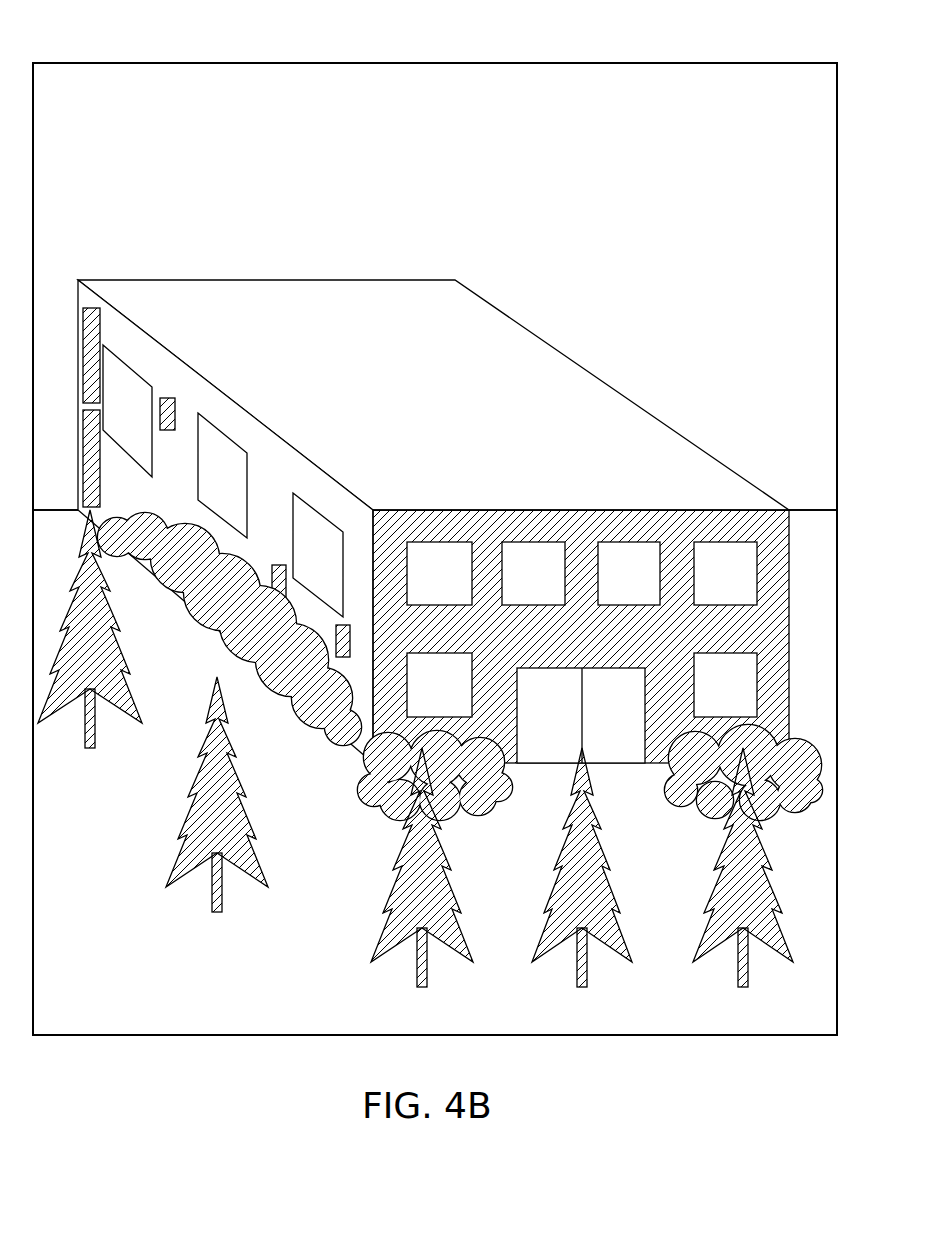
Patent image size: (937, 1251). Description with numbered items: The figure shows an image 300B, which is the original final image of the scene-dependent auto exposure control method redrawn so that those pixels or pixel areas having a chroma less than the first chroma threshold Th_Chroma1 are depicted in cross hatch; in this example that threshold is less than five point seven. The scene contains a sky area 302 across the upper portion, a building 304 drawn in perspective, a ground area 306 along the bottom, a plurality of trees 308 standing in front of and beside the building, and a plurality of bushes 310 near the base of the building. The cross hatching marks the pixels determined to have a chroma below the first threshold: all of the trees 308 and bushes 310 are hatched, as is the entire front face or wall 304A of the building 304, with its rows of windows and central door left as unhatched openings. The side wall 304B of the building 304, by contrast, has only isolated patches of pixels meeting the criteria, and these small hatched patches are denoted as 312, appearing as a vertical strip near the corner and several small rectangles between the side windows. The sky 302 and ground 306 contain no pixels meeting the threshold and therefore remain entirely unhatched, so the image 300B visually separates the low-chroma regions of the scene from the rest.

The image 300B is at (107, 41).
The sky area 302 is at (490, 95).
The building 304 is at (288, 302).
The front face or wall of the building 304A is at (590, 525).
The side wall of the building 304B is at (185, 403).
The ground area 306 is at (247, 1018).
The trees 308 is at (125, 720).
The bushes 310 is at (290, 712).
The patches of pixels 312 is at (95, 312).